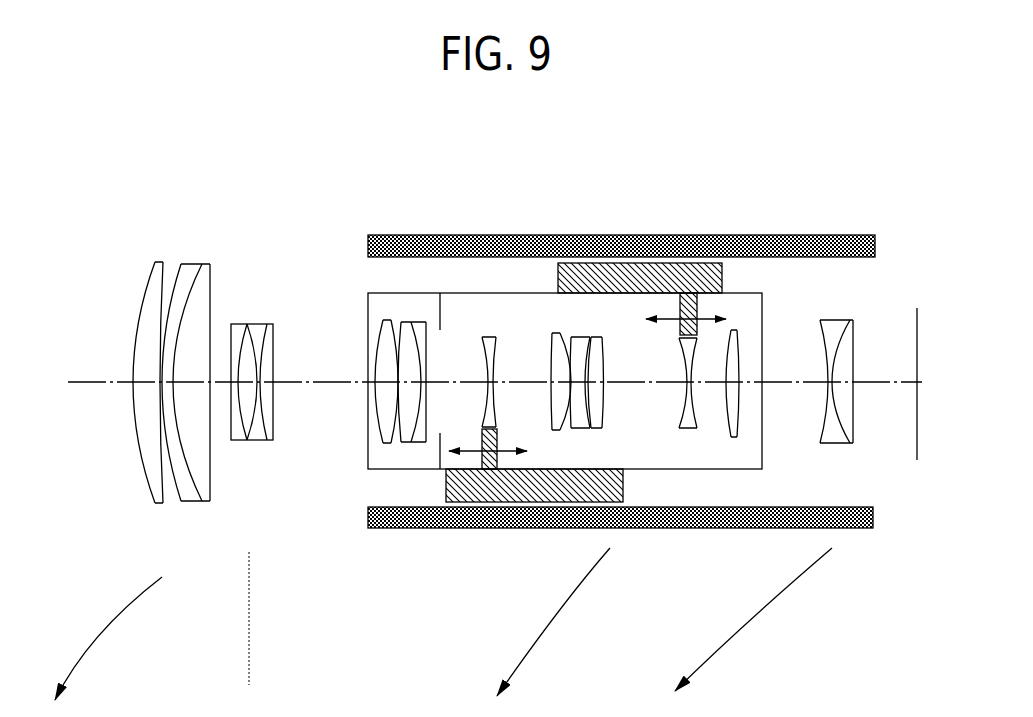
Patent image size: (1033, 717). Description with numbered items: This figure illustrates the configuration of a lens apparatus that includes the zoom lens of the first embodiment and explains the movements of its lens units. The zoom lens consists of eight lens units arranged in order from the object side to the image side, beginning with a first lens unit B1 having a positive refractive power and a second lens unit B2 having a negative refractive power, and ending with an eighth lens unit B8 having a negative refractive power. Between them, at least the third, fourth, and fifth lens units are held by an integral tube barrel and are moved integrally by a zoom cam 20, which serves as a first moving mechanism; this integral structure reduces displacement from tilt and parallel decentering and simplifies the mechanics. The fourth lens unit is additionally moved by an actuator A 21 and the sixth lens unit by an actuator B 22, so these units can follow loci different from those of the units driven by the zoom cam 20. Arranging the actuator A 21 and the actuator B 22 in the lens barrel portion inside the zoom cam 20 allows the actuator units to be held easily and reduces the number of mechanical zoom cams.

The zoom cam 20 is at (478, 237).
The actuator A 21 is at (475, 490).
The actuator B 22 is at (637, 265).
The first lens unit B1 is at (212, 517).
The second lens unit B2 is at (222, 475).
The eighth lens unit B8 is at (798, 468).